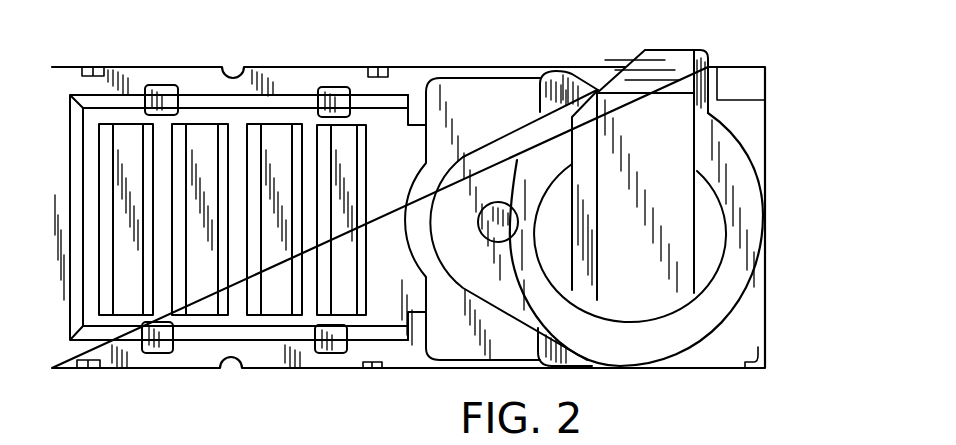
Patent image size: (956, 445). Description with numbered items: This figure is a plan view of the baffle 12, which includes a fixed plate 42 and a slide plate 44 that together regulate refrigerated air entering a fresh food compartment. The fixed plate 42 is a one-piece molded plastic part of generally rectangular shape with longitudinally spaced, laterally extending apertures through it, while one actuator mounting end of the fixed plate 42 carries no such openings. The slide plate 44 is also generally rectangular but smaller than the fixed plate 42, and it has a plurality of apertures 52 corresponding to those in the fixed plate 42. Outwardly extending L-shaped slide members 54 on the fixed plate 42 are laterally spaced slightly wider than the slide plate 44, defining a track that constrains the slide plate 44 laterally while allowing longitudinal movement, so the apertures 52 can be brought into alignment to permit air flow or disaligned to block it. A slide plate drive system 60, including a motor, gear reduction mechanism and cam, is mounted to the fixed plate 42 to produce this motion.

The baffle 12 is at (541, 47).
The fixed plate 42 is at (170, 80).
The slide plate 44 is at (98, 118).
The apertures 52 is at (185, 315).
The L-shaped slide members 54 is at (318, 92).
The slide plate drive system 60 is at (745, 170).